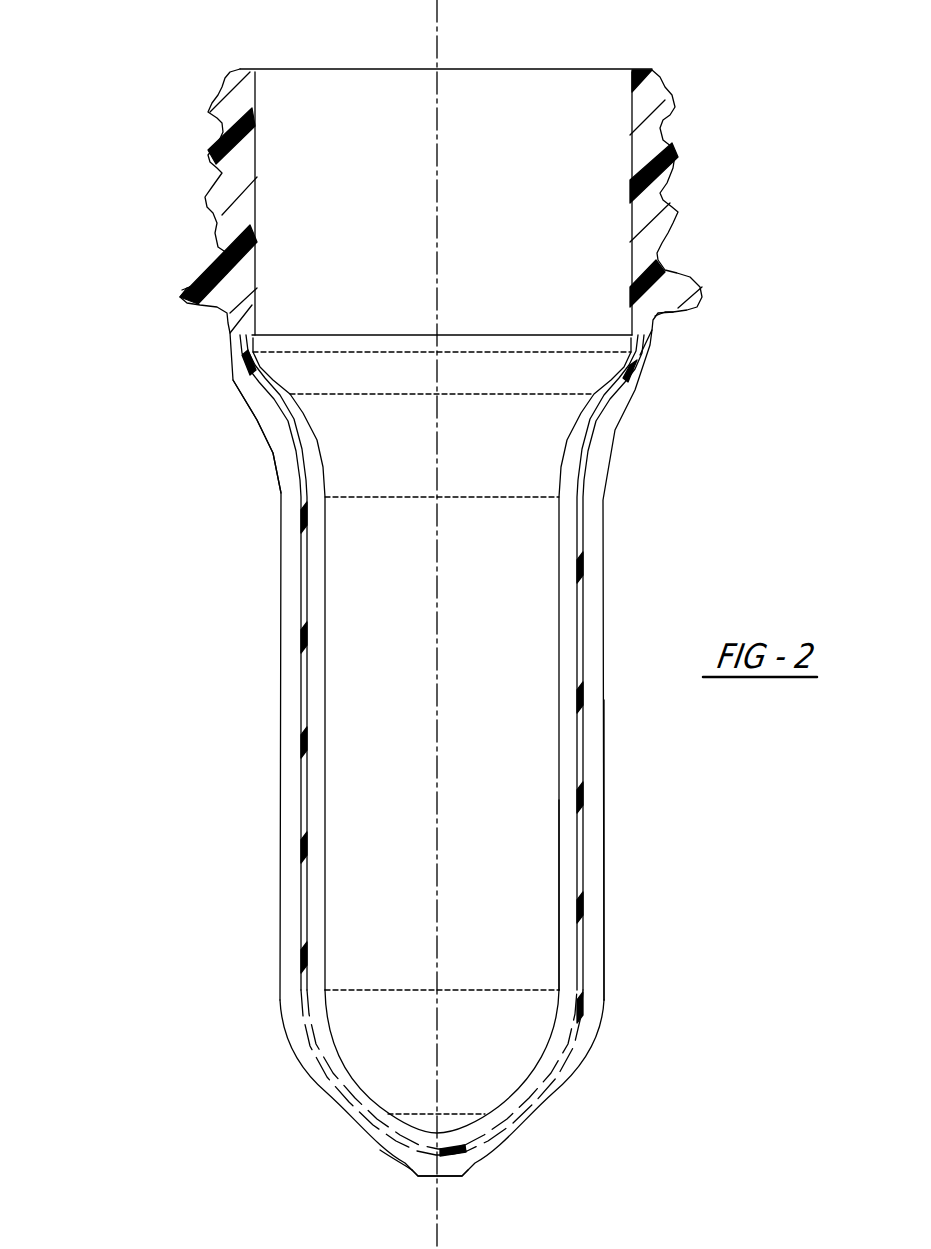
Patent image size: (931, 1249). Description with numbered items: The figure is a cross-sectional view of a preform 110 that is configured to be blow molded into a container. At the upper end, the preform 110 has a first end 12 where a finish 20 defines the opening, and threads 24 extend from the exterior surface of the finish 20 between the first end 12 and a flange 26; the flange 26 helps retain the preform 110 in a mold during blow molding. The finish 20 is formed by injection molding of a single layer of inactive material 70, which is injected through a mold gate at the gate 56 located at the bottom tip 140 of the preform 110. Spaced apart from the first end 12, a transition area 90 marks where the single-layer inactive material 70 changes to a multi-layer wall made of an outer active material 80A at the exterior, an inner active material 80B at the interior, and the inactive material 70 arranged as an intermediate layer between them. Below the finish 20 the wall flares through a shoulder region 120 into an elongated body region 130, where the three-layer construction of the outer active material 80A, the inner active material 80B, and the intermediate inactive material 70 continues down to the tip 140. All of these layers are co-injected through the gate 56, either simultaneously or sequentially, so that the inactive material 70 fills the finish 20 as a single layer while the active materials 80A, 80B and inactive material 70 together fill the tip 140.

The preform 110 is at (103, 120).
The first end 12 is at (240, 66).
The threads 24 is at (210, 108).
The finish 20 is at (223, 173).
The flange 26 is at (180, 292).
The inactive material 70 is at (647, 208).
The transition area 90 is at (653, 325).
The shoulder 120 is at (265, 423).
The body 130 is at (280, 744).
The outer active material 80A is at (603, 850).
The inner active material 80B is at (558, 906).
The tip 140 is at (387, 1156).
The gate 56 is at (448, 1173).